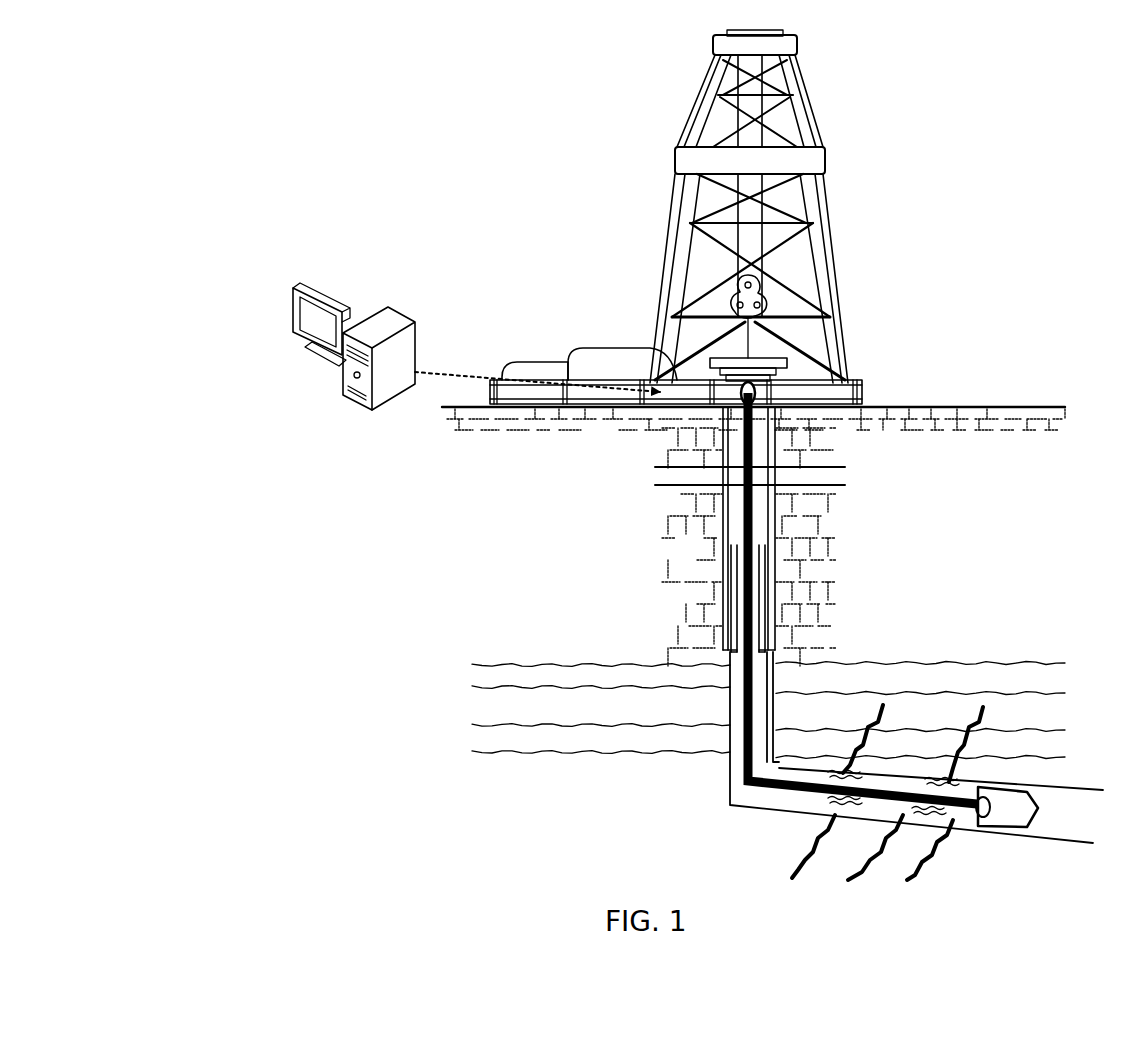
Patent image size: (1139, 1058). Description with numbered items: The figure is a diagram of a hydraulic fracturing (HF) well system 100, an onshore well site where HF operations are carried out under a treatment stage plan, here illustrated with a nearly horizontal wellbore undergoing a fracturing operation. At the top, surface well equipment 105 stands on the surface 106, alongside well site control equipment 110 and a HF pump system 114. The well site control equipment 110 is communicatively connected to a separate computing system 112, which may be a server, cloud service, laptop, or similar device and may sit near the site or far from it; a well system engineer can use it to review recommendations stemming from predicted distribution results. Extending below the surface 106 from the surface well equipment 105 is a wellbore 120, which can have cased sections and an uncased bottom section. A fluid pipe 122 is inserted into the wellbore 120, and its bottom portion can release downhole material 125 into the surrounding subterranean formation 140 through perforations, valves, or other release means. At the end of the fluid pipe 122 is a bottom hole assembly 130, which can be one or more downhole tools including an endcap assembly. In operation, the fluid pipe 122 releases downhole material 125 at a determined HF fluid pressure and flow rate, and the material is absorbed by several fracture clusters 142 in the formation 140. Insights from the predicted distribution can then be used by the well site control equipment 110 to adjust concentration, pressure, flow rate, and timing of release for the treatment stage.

The HF well system 100 is at (330, 79).
The surface well equipment 105 is at (828, 238).
The surface 106 is at (1000, 398).
The well site control equipment 110 is at (606, 381).
The computing system 112 is at (402, 312).
The HF pump system 114 is at (616, 381).
The wellbore 120 is at (720, 519).
The fluid pipe 122 is at (727, 773).
The downhole material 125 is at (816, 774).
The bottom hole assembly 130 is at (1040, 790).
The subterranean formation 140 is at (1040, 643).
The fracture clusters 142 is at (983, 706).